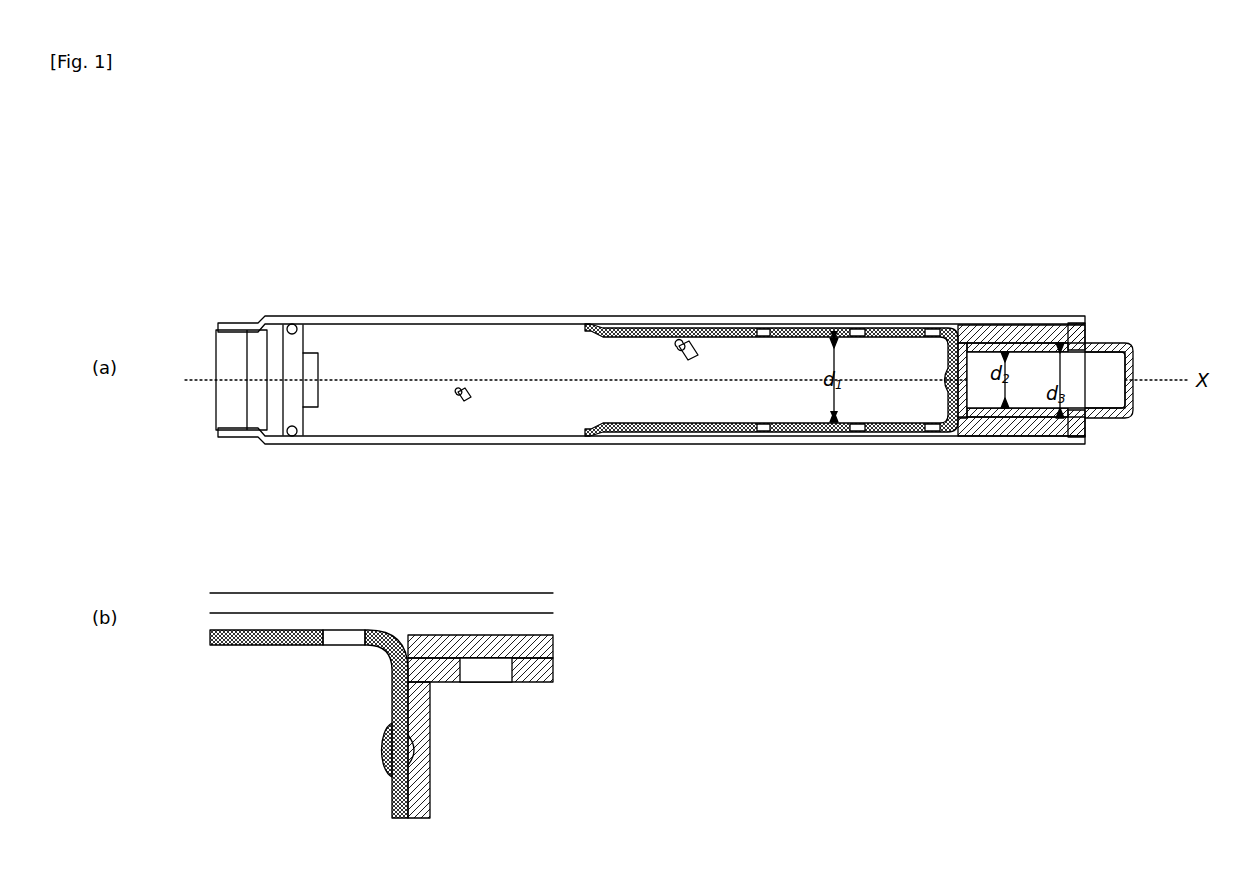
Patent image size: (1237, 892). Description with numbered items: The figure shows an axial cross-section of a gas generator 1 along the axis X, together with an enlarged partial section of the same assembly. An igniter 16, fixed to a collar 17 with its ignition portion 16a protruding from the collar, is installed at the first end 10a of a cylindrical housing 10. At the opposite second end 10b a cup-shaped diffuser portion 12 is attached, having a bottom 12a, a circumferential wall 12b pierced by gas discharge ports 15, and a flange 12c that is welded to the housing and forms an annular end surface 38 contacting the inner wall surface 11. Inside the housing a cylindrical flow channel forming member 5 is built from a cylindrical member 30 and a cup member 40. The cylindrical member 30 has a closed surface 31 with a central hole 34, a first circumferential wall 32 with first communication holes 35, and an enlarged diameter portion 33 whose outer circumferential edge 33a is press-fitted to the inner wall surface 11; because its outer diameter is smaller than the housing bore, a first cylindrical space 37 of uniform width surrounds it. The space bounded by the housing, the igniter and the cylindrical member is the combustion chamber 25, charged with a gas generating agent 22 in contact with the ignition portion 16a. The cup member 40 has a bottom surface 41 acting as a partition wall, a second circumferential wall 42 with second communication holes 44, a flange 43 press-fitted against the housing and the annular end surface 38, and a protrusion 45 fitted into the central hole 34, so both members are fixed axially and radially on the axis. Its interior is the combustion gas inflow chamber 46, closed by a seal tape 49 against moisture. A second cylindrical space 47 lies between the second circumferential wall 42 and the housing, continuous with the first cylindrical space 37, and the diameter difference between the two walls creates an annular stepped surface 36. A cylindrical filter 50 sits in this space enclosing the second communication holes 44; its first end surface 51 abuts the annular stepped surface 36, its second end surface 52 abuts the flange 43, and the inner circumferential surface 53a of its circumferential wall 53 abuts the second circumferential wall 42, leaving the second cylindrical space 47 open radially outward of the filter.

The gas generator 1 is at (656, 303).
The cylindrical flow channel forming member 5 is at (760, 520).
The cylindrical housing 10 is at (540, 316).
The first end 10a is at (228, 437).
The second end 10b is at (1072, 445).
The inner wall surface 11 is at (468, 330).
The diffuser portion 12 is at (1140, 379).
The bottom 12a is at (1134, 417).
The circumferential wall 12b is at (1128, 346).
The flange 12c is at (1088, 341).
The gas discharge ports 15 is at (1096, 420).
The igniter 16 is at (259, 380).
The ignition portion 16a is at (325, 395).
The collar 17 is at (223, 393).
The gas generating agent 22 is at (456, 397).
The combustion chamber 25 is at (495, 558).
The cylindrical member 30 is at (584, 536).
The closed surface 31 is at (946, 340).
The first circumferential wall 32 is at (816, 433).
The enlarged diameter portion 33 is at (582, 333).
The outer circumferential edge 33a is at (586, 327).
The central hole 34 is at (945, 370).
The first communication holes 35 is at (762, 433).
The annular stepped surface 36 is at (392, 650).
The first cylindrical space 37 is at (800, 327).
The annular end surface 38 is at (1062, 420).
The cup member 40 is at (760, 539).
The bottom surface 41 is at (967, 404).
The second circumferential wall 42 is at (985, 417).
The flange 43 is at (1076, 323).
The second communication holes 44 is at (1020, 417).
The protrusion 45 is at (945, 385).
The combustion gas inflow chamber 46 is at (819, 571).
The second cylindrical space 47 is at (746, 459).
The seal tape 49 is at (1079, 366).
The cylindrical filter 50 is at (966, 433).
The first end surface 51 is at (948, 434).
The second end surface 52 is at (1088, 437).
The circumferential wall 53 is at (415, 635).
The inner circumferential surface 53a is at (415, 710).